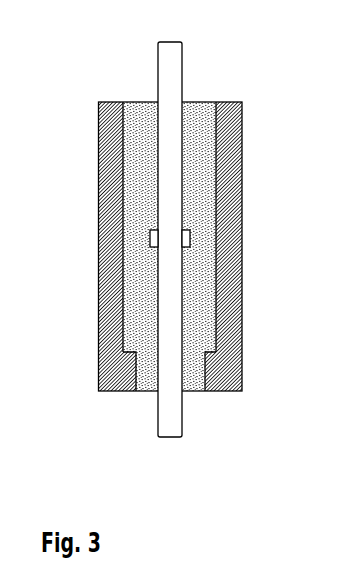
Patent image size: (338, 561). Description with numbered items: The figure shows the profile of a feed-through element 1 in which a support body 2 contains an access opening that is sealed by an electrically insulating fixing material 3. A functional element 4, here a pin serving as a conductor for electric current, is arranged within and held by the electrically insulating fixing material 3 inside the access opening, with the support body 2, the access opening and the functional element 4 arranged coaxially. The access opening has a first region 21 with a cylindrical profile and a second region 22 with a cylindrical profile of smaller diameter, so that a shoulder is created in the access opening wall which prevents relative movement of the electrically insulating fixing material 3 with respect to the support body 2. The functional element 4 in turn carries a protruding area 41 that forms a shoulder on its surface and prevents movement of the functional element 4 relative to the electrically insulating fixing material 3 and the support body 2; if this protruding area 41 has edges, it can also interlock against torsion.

The feed-through element 1 is at (85, 408).
The support body 2 is at (232, 166).
The first region 21 is at (103, 188).
The second region 22 is at (133, 375).
The electrically insulating fixing material 3 is at (197, 110).
The functional element 4 is at (157, 438).
The protruding area 41 is at (190, 240).